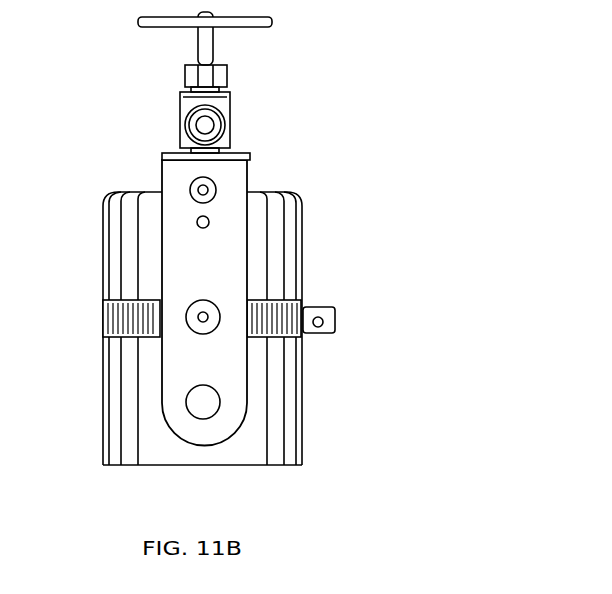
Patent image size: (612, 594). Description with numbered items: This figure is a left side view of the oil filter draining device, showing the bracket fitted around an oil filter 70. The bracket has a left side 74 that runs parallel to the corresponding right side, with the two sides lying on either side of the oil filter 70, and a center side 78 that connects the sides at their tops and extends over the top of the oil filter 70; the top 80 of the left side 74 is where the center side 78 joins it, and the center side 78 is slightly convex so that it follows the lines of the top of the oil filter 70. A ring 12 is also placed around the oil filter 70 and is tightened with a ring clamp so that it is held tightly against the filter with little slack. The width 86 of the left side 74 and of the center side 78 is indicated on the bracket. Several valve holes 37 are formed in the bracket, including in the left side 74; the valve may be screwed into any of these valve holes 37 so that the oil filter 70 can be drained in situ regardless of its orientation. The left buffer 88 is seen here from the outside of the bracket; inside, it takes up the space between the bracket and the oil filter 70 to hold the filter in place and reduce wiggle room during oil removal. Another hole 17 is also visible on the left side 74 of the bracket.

The center side 78 is at (260, 171).
The oil filter 70 is at (110, 267).
The ring 12 is at (103, 320).
The left side 74 is at (167, 210).
The width 86 is at (247, 257).
The left buffer 88 is at (199, 191).
The middle mounting hole 17 is at (192, 319).
The valve hole 37 is at (193, 400).
The top 80 is at (249, 152).